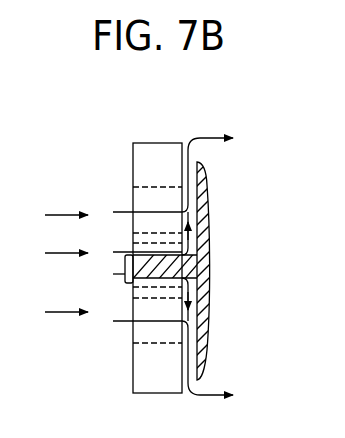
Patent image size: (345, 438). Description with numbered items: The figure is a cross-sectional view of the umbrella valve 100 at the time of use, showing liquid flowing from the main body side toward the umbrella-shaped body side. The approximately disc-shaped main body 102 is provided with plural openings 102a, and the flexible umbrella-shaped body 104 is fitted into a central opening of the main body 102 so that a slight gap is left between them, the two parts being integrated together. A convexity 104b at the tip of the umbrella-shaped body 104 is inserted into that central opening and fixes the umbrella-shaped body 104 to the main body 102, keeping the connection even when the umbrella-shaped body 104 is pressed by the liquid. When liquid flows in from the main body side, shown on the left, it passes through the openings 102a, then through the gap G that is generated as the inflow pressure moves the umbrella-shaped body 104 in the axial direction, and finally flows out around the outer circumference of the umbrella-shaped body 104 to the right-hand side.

The umbrella valve 100 is at (190, 128).
The main body 102 is at (148, 152).
The openings 102a is at (148, 200).
The umbrella-shaped body 104 is at (203, 217).
The convexity 104b is at (118, 265).
The gap G is at (190, 318).